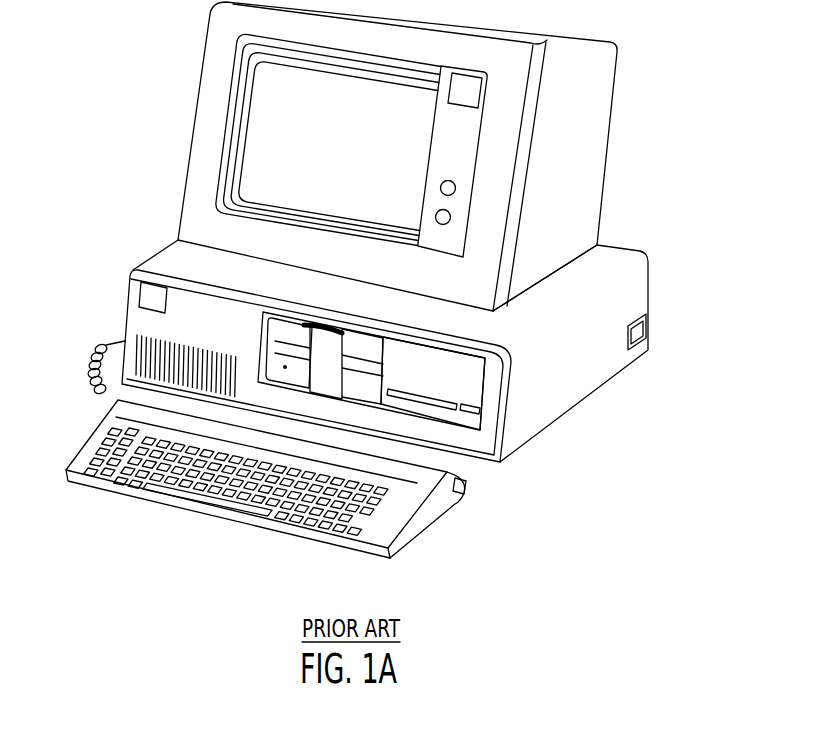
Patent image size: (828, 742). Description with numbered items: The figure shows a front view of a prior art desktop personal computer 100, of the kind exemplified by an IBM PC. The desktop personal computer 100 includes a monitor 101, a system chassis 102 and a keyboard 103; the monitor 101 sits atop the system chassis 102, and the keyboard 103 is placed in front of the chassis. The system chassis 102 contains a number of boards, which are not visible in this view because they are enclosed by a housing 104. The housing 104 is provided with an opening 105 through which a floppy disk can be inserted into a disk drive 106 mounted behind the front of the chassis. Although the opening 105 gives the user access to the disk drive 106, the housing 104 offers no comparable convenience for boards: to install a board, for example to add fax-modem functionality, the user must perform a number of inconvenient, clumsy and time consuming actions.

The desktop personal computer 100 is at (114, 137).
The monitor 101 is at (352, 152).
The system chassis 102 is at (375, 351).
The keyboard 103 is at (435, 522).
The housing 104 is at (142, 318).
The opening 105 is at (361, 374).
The disk drive 106 is at (378, 353).